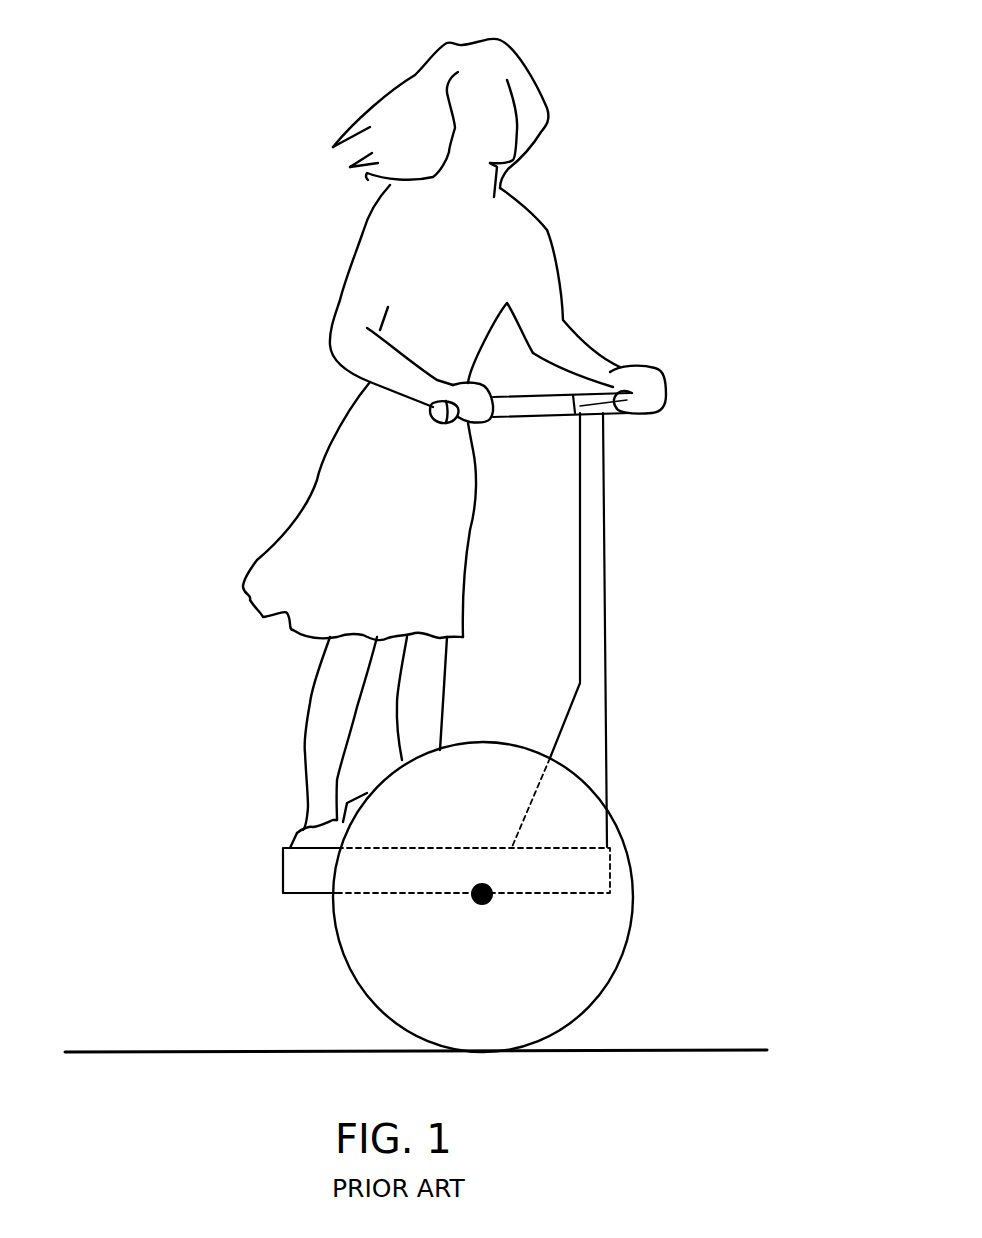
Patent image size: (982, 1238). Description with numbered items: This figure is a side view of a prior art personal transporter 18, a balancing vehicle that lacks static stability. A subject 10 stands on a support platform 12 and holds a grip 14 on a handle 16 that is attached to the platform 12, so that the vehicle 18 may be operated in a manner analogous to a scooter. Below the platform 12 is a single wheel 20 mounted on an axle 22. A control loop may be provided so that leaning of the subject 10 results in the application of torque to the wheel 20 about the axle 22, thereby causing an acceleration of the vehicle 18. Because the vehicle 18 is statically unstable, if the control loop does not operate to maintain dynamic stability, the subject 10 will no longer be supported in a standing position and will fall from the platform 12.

The subject 10 is at (367, 212).
The support platform 12 is at (283, 878).
The grip 14 is at (620, 412).
The handle 16 is at (604, 540).
The personal transporter 18 is at (779, 649).
The wheel 20 is at (628, 942).
The axle 22 is at (483, 907).